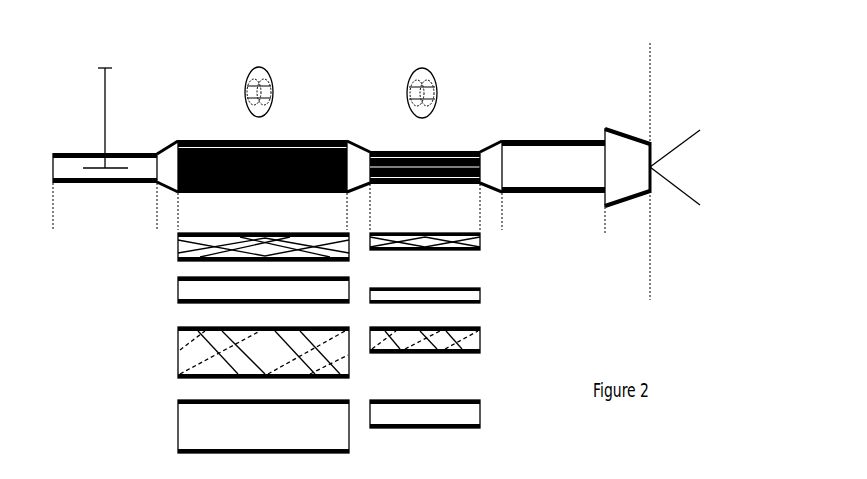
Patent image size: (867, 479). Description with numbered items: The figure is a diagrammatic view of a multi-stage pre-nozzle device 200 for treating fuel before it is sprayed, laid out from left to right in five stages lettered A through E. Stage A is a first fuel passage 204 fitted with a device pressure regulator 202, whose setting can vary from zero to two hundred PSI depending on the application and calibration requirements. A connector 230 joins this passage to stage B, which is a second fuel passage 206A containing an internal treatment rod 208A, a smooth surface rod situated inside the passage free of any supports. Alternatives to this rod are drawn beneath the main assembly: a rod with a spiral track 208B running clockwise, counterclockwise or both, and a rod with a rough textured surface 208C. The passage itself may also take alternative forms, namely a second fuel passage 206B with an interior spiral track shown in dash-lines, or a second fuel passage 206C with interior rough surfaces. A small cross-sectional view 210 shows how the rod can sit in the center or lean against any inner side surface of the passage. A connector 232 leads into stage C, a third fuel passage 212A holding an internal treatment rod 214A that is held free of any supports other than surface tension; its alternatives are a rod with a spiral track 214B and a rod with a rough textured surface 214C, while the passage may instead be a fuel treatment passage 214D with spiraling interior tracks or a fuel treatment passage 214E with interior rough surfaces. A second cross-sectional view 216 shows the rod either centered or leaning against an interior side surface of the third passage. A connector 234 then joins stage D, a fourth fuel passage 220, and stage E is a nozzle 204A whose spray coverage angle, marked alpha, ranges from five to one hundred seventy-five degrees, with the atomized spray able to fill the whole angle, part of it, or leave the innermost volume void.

The multi-stage pre-nozzle device 200 is at (674, 46).
The device pressure regulator 202 is at (104, 126).
The first fuel passage 204 is at (73, 152).
The nozzle 204A is at (627, 132).
The second fuel passage 206A is at (205, 141).
The second fuel passage with interior spiral track 206B is at (177, 340).
The second fuel passage with interior rough surfaces 206C is at (177, 420).
The internal treatment rod 208A is at (250, 152).
The rod with spiral track 208B is at (177, 246).
The rod with rough textured surface 208C is at (177, 292).
The cross-sectional arrangement of rod and second fuel passage 210 is at (277, 86).
The third fuel passage 212A is at (390, 149).
The internal treatment rod 214A is at (407, 157).
The rod with spiral track 214B is at (481, 242).
The rod with rough textured surface 214C is at (483, 290).
The fuel treatment passage with interior spiral tracks 214D is at (483, 338).
The fuel treatment passage with interior rough surfaces 214E is at (483, 412).
The cross-sectional arrangement of rod and third fuel passage 216 is at (435, 94).
The fourth fuel passage 220 is at (553, 141).
The connector 230 is at (163, 142).
The connector 232 is at (354, 139).
The connector 234 is at (487, 139).